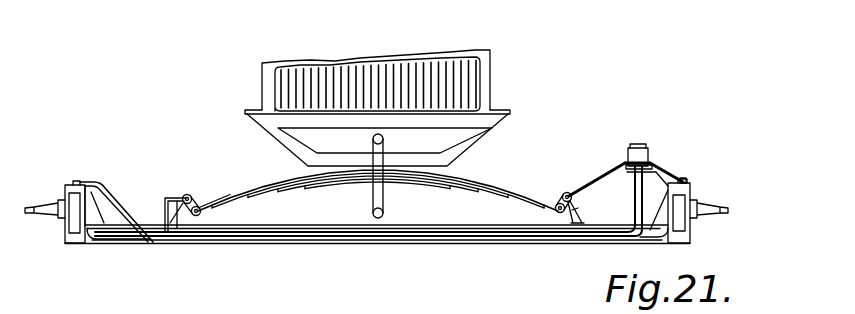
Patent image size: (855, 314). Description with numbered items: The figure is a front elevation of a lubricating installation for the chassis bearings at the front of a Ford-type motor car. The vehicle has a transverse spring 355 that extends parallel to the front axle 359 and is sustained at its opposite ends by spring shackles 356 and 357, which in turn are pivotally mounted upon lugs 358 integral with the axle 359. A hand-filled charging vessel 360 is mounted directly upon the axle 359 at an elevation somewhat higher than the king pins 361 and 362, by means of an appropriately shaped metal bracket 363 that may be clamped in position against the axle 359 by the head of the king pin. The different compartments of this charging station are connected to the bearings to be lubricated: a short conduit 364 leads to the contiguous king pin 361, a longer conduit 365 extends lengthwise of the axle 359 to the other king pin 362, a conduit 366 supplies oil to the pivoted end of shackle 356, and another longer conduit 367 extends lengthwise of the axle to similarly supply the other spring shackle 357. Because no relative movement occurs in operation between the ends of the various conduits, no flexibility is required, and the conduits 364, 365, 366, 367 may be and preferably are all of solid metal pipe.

The transverse spring 355 is at (486, 174).
The spring shackle 356 is at (565, 194).
The spring shackle 357 is at (203, 197).
The lugs 358 is at (166, 197).
The axle 359 is at (437, 226).
The hand-filled charging vessel 360 is at (632, 147).
The king pin 361 is at (688, 179).
The king pin 362 is at (72, 181).
The metal bracket 363 is at (668, 165).
The short conduit 364 is at (652, 165).
The longer conduit 365 is at (316, 245).
The conduit 366 is at (607, 173).
The longer conduit 367 is at (264, 230).